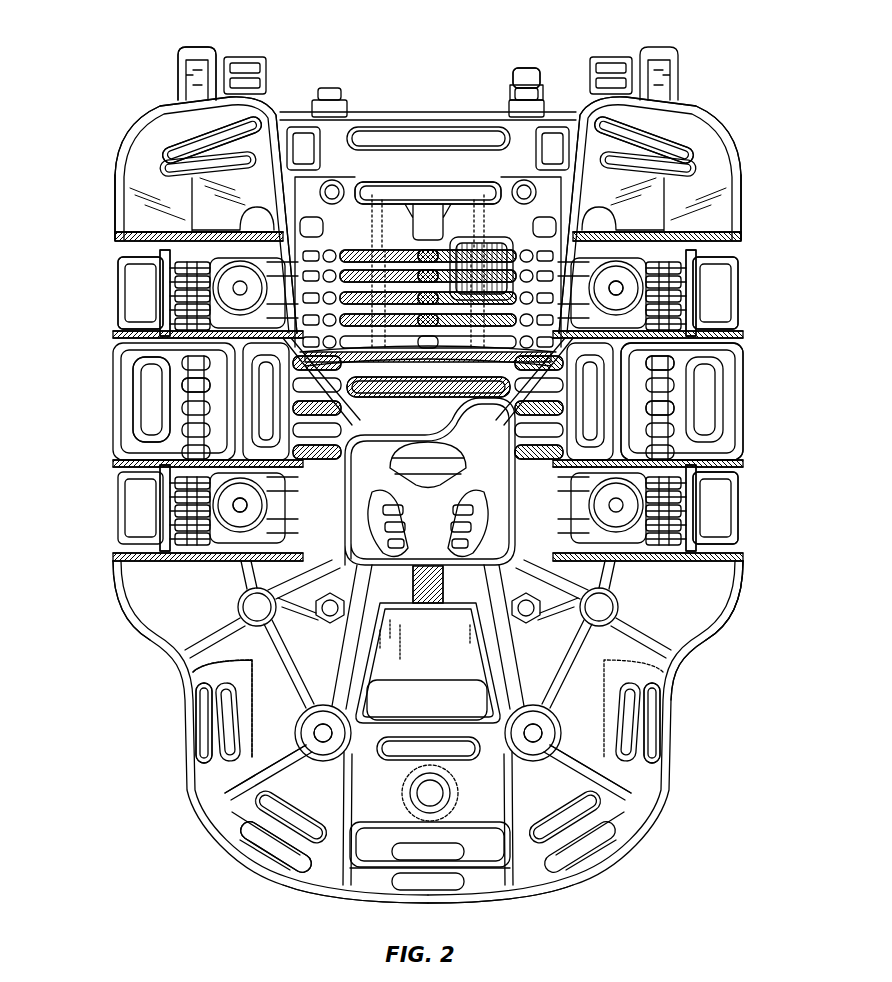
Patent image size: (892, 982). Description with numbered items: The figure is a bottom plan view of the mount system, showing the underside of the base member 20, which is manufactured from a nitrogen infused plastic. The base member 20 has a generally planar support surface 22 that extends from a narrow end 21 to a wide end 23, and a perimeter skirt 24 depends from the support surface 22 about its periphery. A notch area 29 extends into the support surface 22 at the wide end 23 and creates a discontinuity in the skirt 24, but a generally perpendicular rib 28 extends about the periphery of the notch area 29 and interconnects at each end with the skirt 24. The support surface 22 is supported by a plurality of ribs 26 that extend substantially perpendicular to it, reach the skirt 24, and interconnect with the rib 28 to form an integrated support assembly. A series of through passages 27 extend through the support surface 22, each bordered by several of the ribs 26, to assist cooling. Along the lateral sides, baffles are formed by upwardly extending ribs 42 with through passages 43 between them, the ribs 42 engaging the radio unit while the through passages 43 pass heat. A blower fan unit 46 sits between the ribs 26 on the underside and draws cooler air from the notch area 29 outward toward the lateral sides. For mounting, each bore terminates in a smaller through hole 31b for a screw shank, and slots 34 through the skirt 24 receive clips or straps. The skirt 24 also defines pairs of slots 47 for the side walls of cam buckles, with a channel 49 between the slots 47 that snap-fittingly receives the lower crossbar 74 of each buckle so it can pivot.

The base member 20 is at (738, 138).
The narrow end 21 is at (520, 908).
The support surface 22 is at (252, 663).
The wide end 23 is at (279, 92).
The perimeter skirt 24 is at (738, 592).
The ribs 26 is at (177, 230).
The through passages 27 is at (603, 427).
The rib 28 is at (578, 240).
The notch area 29 is at (381, 168).
The through hole 31b is at (613, 293).
The slots 34 is at (190, 180).
The ribs 42 is at (667, 377).
The through passages 43 is at (673, 363).
The blower fan unit 46 is at (473, 568).
The slots 47 is at (110, 246).
The channel 49 is at (165, 278).
The lower crossbar 74 is at (160, 285).